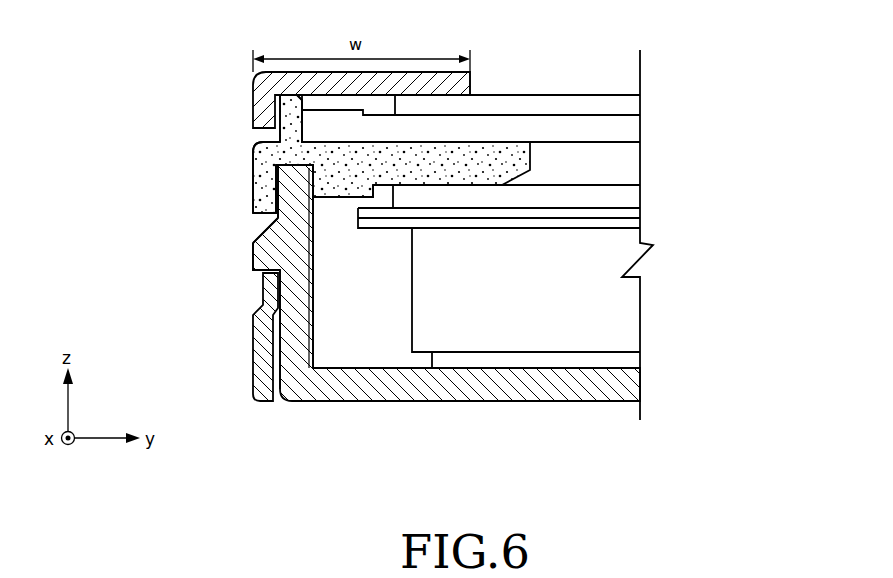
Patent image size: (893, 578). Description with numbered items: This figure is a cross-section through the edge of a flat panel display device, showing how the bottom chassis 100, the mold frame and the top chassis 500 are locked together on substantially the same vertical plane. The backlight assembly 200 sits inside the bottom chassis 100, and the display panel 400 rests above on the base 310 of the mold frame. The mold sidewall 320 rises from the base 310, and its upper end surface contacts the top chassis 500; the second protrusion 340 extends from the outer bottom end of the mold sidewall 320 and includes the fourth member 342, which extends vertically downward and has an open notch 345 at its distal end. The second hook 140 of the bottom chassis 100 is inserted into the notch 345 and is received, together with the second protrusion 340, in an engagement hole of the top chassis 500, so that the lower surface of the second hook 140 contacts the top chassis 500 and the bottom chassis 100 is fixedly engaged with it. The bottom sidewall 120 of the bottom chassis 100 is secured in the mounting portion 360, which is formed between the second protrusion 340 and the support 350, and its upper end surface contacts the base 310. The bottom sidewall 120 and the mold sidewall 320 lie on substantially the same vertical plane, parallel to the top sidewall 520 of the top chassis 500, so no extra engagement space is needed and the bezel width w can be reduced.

The bottom chassis 100 is at (398, 383).
The bottom sidewall 120 is at (290, 193).
The second hook 140 is at (253, 260).
The backlight assembly 200 is at (615, 320).
The base 310 is at (519, 158).
The mold sidewall 320 is at (287, 110).
The second protrusion 340 is at (252, 153).
The fourth member 342 is at (255, 200).
The notch 345 is at (263, 225).
The support 350 is at (350, 188).
The mounting portion 360 is at (283, 175).
The display panel 400 is at (608, 103).
The top chassis 500 is at (251, 87).
The top sidewall 520 is at (262, 112).